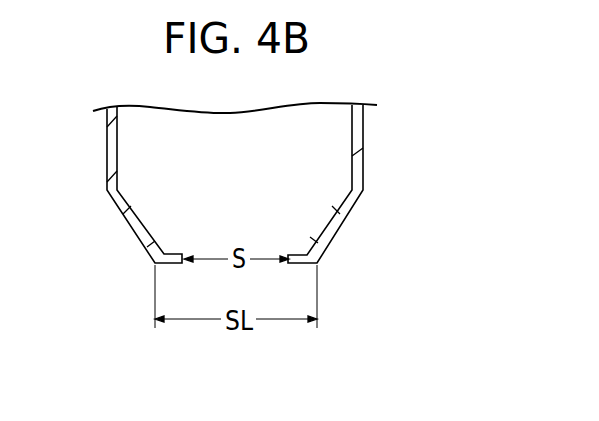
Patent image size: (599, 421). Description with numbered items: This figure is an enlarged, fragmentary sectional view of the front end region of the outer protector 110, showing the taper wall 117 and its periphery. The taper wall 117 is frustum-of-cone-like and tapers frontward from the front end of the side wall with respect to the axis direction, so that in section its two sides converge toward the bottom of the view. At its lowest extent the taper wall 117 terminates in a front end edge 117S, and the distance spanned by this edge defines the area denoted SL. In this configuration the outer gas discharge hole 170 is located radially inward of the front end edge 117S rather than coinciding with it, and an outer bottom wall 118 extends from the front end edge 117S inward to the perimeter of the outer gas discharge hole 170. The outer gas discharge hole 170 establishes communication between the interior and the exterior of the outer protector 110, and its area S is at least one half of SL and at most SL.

The outer protector 110 is at (363, 141).
The taper wall 117 is at (127, 230).
The front end edge 117S is at (152, 274).
The outer bottom wall 118 is at (175, 247).
The outer gas discharge hole 170 is at (262, 250).